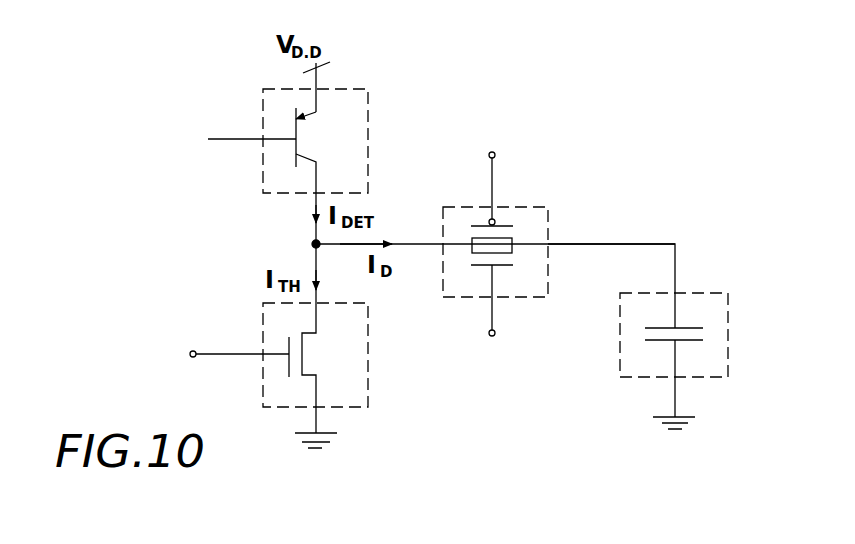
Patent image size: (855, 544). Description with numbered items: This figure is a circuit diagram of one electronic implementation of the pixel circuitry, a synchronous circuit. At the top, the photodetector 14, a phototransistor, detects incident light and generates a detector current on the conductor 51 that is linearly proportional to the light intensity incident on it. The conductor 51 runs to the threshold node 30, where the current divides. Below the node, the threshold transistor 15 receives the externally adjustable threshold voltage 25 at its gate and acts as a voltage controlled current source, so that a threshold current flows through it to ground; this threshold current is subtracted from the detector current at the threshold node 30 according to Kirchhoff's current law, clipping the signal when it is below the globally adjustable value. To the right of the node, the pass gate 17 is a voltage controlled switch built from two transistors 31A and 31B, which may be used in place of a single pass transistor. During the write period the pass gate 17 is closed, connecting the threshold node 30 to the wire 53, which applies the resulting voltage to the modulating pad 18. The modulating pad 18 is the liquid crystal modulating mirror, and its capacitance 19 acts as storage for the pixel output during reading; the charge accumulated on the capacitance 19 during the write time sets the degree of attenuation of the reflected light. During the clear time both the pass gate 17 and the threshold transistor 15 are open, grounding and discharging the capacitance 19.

The photodetector 14 is at (351, 153).
The threshold transistor 15 is at (352, 368).
The pass gate 17 is at (548, 222).
The modulating pad 18 is at (642, 293).
The capacitance of the pixel modulating mirror 19 is at (640, 332).
The threshold voltage input 25 is at (193, 351).
The threshold node 30 is at (316, 244).
The pass gate transistor 31A is at (495, 152).
The pass gate transistor 31B is at (489, 338).
The conductor 51 is at (413, 244).
The wire 53 is at (648, 245).